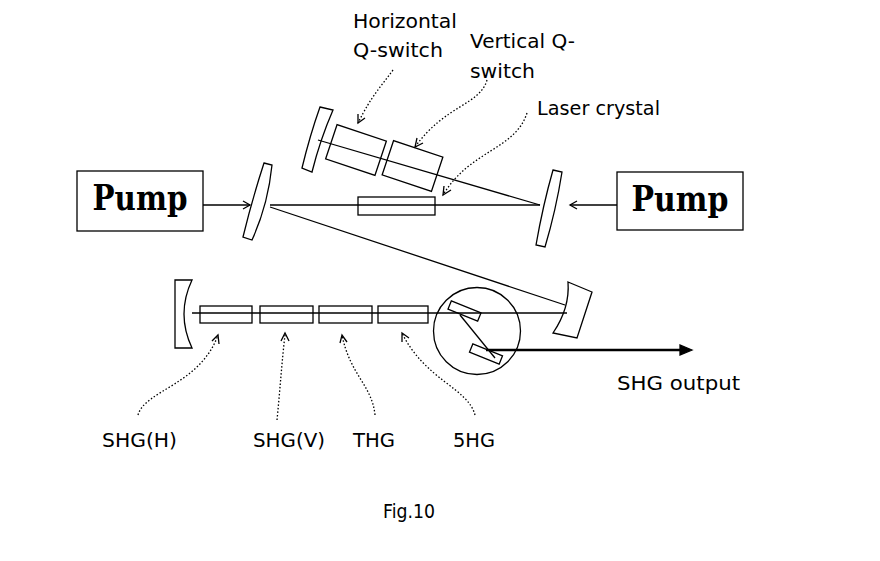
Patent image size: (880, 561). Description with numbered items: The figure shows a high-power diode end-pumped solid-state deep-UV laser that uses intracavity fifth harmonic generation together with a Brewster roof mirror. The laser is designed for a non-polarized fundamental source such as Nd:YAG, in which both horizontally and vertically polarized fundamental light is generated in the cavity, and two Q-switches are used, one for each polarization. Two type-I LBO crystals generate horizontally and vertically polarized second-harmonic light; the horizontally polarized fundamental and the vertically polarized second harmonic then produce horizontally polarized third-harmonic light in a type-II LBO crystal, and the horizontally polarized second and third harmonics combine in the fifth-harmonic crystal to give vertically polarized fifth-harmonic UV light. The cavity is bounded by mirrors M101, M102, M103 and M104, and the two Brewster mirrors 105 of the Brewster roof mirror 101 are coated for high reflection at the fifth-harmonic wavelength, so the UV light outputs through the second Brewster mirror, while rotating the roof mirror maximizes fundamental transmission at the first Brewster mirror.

The concave mirror M101 is at (324, 125).
The dichroic mirrors M102 is at (406, 193).
The concave mirror M103 is at (603, 303).
The concave mirror M104 is at (165, 299).
The Brewster mirrors 105 is at (458, 327).
The harmonic separator unit 101 is at (520, 357).